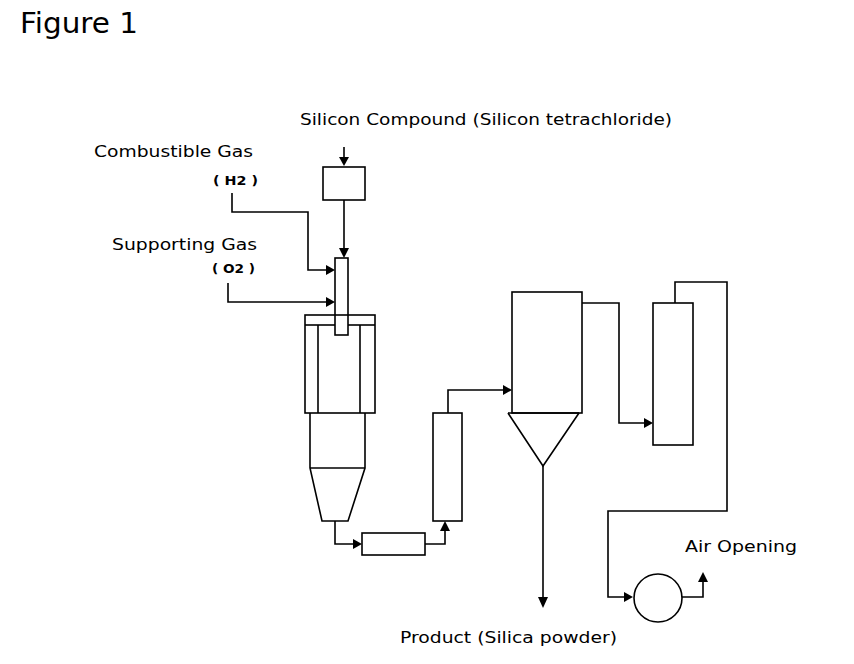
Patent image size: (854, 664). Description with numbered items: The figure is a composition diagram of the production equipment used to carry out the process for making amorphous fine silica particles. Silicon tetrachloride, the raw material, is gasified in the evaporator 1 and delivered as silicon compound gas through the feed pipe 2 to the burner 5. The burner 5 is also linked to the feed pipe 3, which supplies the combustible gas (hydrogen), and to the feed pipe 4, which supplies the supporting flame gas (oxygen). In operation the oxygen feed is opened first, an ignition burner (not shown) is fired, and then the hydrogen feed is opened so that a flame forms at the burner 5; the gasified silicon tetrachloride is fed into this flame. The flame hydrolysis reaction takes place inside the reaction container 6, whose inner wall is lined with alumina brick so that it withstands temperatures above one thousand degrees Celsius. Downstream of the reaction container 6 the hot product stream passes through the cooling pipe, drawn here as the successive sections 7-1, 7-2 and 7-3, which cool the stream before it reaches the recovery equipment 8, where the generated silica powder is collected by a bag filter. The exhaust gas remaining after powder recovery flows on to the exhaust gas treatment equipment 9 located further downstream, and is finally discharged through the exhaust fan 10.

The evaporator 1 is at (354, 173).
The feed pipe 2 is at (351, 229).
The feed pipe 3 is at (283, 234).
The feed pipe 4 is at (281, 295).
The burner 5 is at (352, 296).
The reaction container 6 is at (323, 364).
The cooling pipe 7-1 is at (314, 481).
The cooling pipe 7-2 is at (406, 554).
The cooling pipe 7-3 is at (472, 453).
The recovery equipment 8 is at (565, 450).
The exhaust gas treatment equipment 9 is at (667, 442).
The exhaust fan 10 is at (671, 600).